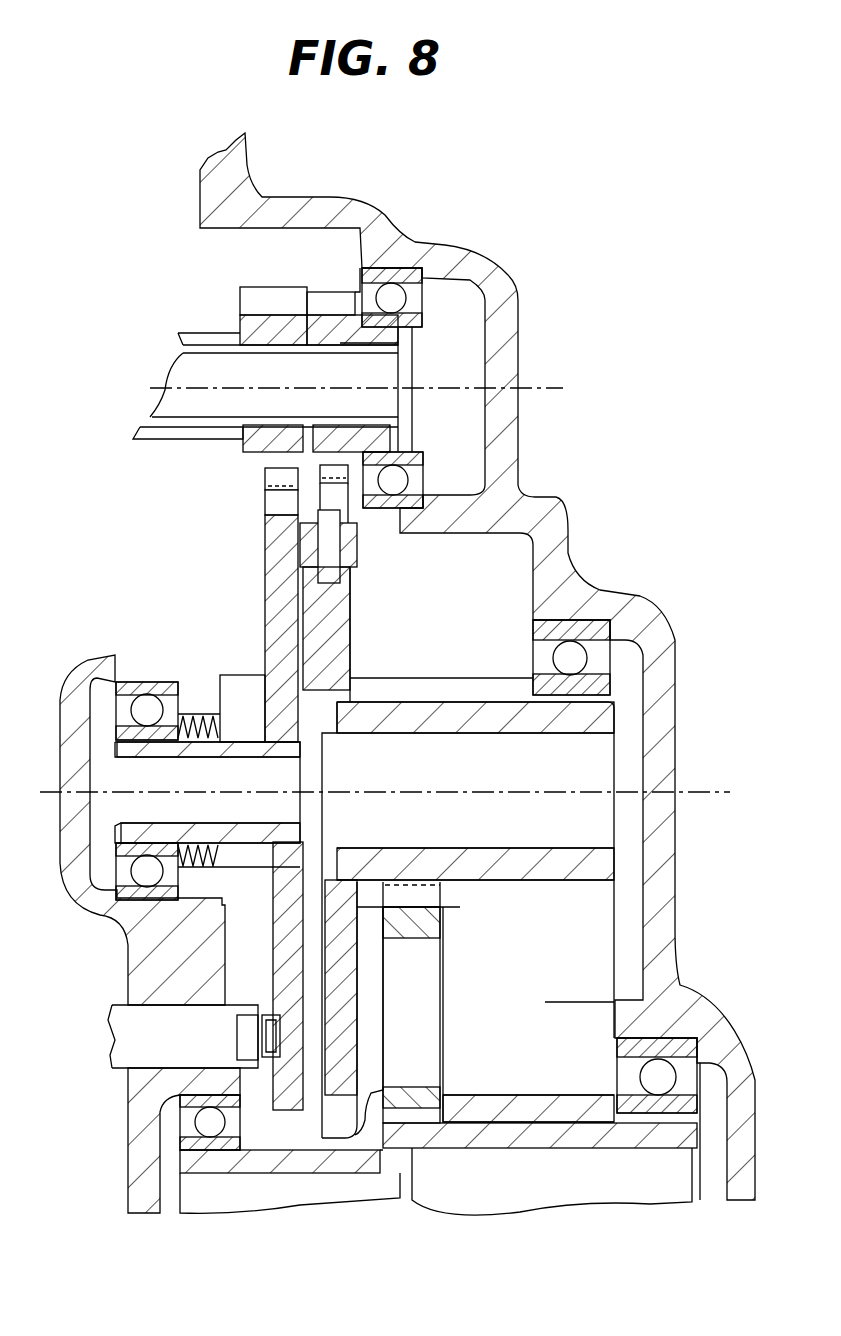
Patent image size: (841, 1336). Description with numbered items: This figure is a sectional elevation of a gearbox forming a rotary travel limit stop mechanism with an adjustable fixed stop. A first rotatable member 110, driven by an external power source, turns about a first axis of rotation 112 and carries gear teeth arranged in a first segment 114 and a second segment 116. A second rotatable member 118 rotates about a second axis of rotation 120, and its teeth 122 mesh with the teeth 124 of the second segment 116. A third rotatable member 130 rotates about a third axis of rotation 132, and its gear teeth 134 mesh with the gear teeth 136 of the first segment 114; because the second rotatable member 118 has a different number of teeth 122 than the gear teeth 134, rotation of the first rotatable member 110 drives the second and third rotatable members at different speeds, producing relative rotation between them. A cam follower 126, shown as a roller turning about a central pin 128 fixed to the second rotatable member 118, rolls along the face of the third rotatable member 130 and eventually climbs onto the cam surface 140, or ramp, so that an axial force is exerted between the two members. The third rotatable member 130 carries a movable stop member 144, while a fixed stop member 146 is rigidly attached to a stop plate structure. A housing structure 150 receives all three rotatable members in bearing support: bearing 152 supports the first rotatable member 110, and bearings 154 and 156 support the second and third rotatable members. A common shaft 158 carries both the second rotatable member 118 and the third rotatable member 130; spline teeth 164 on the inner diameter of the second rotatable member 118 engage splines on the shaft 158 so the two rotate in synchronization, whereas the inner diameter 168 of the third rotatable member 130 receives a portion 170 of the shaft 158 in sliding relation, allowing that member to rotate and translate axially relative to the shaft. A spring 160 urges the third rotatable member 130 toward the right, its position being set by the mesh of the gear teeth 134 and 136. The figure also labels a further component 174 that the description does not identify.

The first rotatable member 110 is at (185, 397).
The first axis of rotation 112 is at (553, 382).
The first segment 114 is at (237, 323).
The second segment 116 is at (420, 328).
The second rotatable member 118 is at (347, 657).
The second axis of rotation 120 is at (688, 790).
The teeth 122 is at (338, 473).
The teeth 124 is at (328, 300).
The cam follower 126 is at (360, 550).
The central pin 128 is at (357, 583).
The third rotatable member 130 is at (272, 535).
The third axis of rotation 132 is at (725, 792).
The gear teeth 134 is at (225, 442).
The gear teeth 136 is at (268, 297).
The cam surface 140 is at (316, 1067).
The movable stop member 144 is at (255, 1003).
The fixed stop member 146 is at (130, 1050).
The housing structure 150 is at (548, 510).
The bearing 152 is at (388, 272).
The bearing 154 is at (608, 626).
The bearing 156 is at (118, 680).
The shaft 158 is at (358, 723).
The spring 160 is at (173, 682).
The spline teeth 164 is at (400, 683).
The inner diameter 168 is at (225, 845).
The portion of the shaft 170 is at (255, 735).
The plate 174 is at (298, 615).